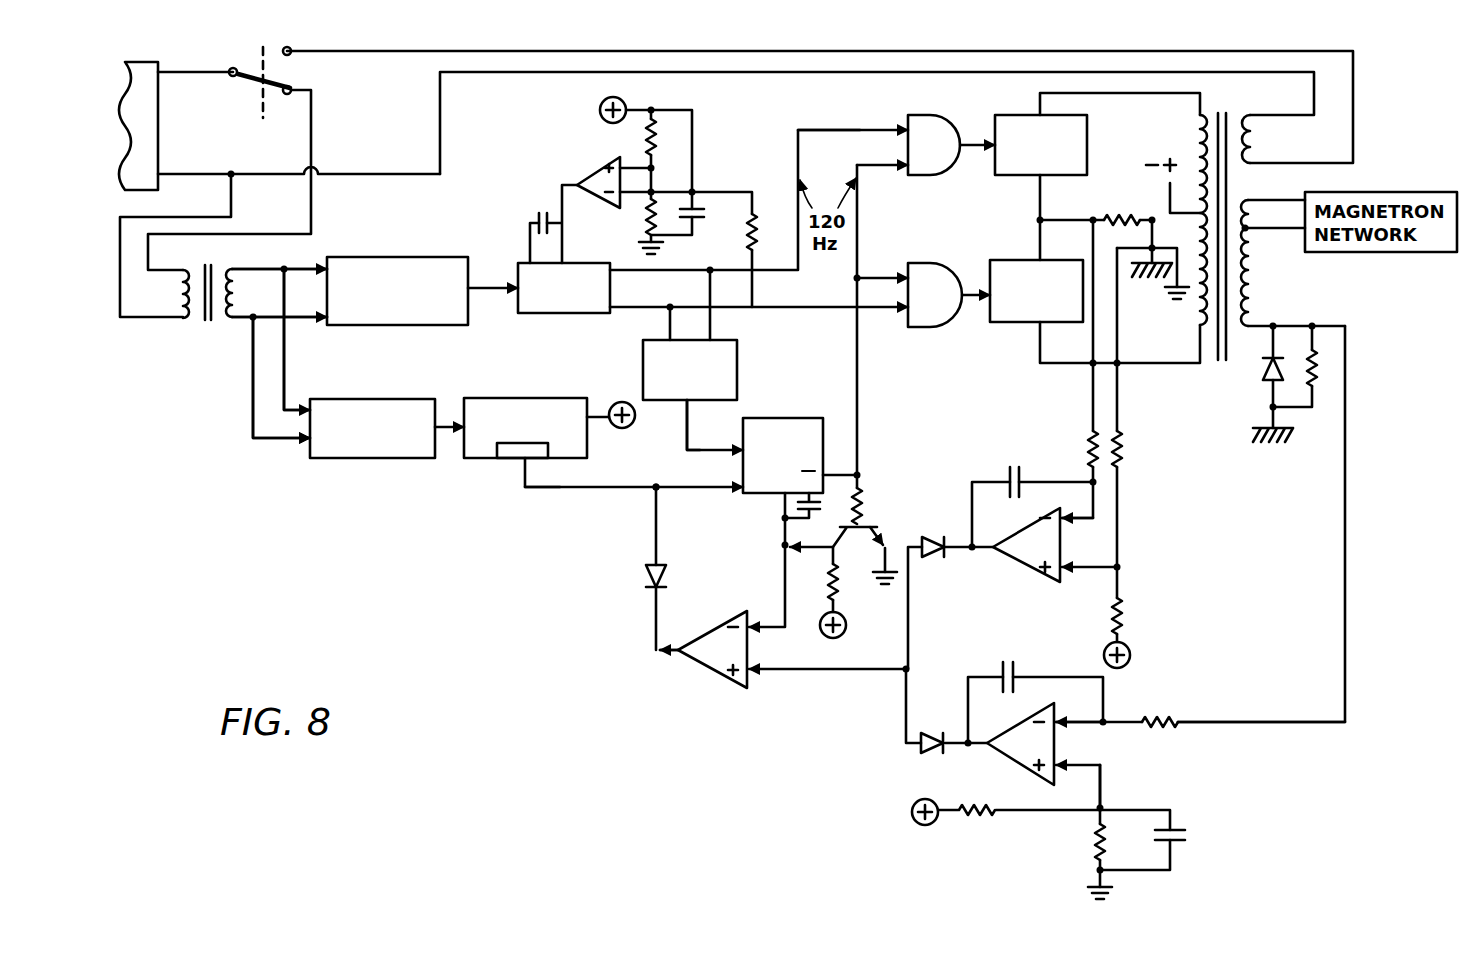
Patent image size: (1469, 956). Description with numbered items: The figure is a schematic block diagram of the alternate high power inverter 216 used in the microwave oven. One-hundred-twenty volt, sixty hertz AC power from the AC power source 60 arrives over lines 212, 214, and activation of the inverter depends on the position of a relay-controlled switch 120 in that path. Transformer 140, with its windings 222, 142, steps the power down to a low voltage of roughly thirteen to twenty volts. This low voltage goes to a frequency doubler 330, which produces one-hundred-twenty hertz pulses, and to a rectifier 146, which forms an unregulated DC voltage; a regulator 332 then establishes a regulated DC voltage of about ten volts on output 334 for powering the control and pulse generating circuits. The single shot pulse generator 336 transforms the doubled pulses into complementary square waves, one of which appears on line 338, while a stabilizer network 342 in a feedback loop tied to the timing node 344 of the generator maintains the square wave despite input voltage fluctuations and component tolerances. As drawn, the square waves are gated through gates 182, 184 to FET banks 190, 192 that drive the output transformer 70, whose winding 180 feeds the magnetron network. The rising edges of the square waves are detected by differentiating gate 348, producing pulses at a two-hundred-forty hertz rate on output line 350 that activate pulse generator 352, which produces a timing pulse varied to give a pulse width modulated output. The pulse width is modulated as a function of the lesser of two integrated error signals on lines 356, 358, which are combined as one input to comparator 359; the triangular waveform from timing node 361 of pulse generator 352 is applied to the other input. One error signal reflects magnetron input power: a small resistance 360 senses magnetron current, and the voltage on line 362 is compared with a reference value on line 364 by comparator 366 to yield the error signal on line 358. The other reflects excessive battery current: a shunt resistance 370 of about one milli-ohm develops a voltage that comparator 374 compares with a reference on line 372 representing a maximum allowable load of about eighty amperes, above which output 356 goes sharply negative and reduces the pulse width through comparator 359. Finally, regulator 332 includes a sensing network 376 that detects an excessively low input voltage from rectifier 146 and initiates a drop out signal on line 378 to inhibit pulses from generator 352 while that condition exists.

The power source / line input 60 is at (160, 118).
The power line 212 is at (194, 72).
The switch blade 120 is at (246, 78).
The power line 214 is at (217, 177).
The transformer 140 is at (208, 322).
The primary winding 222 is at (184, 310).
The secondary winding 142 is at (232, 272).
The frequency doubler 330 is at (365, 257).
The single shot pulse generator 336 is at (562, 315).
The timing node 344 is at (560, 263).
The stabilizer network 342 is at (636, 146).
The square wave line 338 is at (868, 128).
The AND gate 182 is at (948, 118).
The AND gate 184 is at (946, 262).
The FET bank 190 is at (1088, 138).
The FET bank 192 is at (1010, 322).
The shunt resistance 370 is at (1122, 214).
The transformer 70 is at (1216, 370).
The winding 180 is at (1254, 148).
The sensing resistance 360 is at (1322, 365).
The rectifier 146 is at (363, 399).
The regulator 332 is at (540, 398).
The regulator output 334 is at (600, 424).
The sensing network 376 is at (518, 452).
The drop out signal line 378 is at (520, 498).
The high power inverter 216 is at (563, 565).
The differentiating gate 348 is at (740, 352).
The output line 350 is at (740, 402).
The pulse generator 352 is at (770, 418).
The timing node 361 is at (780, 522).
The comparator 359 is at (692, 660).
The error signal line 356 is at (950, 556).
The comparator 374 is at (1006, 566).
The reference line 372 is at (1092, 566).
The error signal line 358 is at (948, 755).
The comparator 366 is at (1018, 762).
The reference line 364 is at (1102, 795).
The sense voltage line 362 is at (1286, 725).